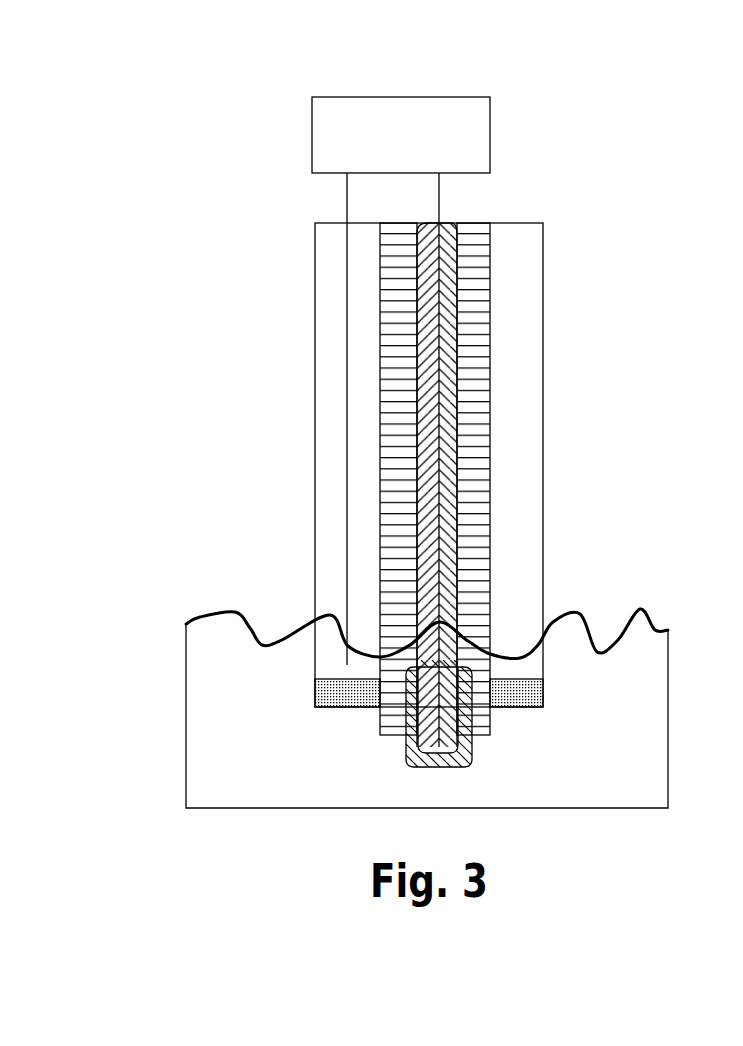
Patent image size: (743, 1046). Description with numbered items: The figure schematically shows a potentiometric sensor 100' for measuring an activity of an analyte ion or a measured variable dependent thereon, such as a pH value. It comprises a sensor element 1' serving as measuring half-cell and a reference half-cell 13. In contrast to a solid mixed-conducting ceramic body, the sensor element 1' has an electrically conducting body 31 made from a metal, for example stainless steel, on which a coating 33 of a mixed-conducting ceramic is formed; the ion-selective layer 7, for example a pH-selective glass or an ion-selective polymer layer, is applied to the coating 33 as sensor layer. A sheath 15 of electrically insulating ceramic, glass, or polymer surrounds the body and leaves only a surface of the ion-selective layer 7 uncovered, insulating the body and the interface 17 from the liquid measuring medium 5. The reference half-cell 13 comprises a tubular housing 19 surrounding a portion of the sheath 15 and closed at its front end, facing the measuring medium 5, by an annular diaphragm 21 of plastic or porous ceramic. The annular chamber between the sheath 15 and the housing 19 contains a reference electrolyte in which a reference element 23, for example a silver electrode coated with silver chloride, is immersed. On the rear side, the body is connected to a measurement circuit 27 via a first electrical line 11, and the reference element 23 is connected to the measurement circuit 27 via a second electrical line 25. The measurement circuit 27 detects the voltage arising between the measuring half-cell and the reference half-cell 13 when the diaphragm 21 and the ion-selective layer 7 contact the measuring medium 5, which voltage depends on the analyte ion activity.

The potentiometric sensor 100' is at (455, 452).
The measurement circuit 27 is at (383, 149).
The second electrical line 25 is at (347, 187).
The first electrical line 11 is at (440, 202).
The tubular housing 19 is at (315, 302).
The reference half-cell 13 is at (283, 421).
The reference element 23 is at (348, 490).
The sheath 15 is at (480, 427).
The electrically conducting body 31 is at (455, 470).
The coating 33 is at (455, 535).
The annular diaphragm 21 is at (316, 697).
The interface 17 is at (417, 725).
The ion-selective layer 7 is at (410, 768).
The sensor element 1' is at (427, 745).
The liquid measuring medium 5 is at (632, 725).